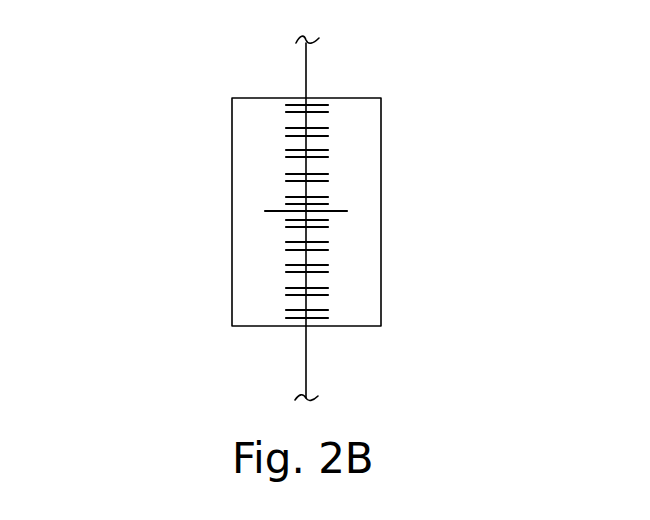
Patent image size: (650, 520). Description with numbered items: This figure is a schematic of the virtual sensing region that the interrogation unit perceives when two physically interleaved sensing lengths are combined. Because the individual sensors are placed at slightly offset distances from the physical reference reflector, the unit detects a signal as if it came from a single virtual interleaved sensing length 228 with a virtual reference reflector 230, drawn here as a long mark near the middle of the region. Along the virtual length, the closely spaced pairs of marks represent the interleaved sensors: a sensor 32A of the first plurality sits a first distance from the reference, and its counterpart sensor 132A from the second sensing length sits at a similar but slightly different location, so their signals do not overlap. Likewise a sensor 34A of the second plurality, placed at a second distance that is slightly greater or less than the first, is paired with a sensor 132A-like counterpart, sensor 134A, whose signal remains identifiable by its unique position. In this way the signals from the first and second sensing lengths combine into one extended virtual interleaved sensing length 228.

The virtual interleaved sensing length 228 is at (381, 122).
The virtual reference reflector 230 is at (274, 211).
The sensor 32A is at (320, 150).
The sensor 132A is at (320, 157).
The sensor 34A is at (320, 265).
The sensor 134A is at (320, 272).